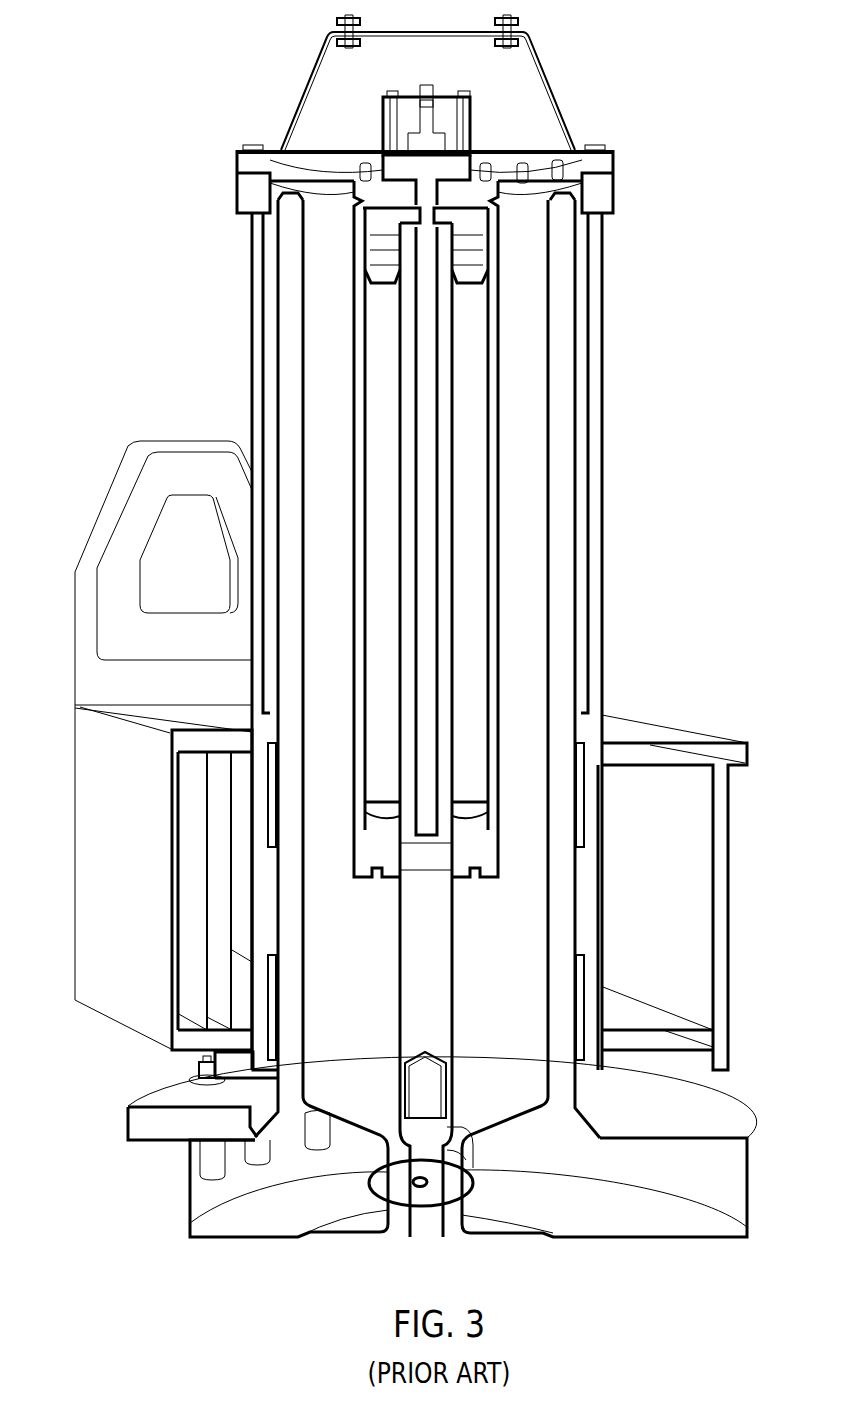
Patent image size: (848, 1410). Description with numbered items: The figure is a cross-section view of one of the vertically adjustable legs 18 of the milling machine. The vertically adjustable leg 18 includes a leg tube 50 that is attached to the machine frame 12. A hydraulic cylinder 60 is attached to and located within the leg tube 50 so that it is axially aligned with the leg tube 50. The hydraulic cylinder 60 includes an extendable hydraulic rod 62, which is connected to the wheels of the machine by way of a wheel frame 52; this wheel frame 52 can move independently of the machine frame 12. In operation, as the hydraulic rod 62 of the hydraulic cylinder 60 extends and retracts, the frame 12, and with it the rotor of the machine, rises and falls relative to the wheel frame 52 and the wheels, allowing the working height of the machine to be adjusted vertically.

The frame 12 is at (103, 953).
The vertically adjustable leg 18 is at (634, 125).
The leg tube 50 is at (580, 640).
The wheel frame 52 is at (170, 1095).
The hydraulic cylinder 60 is at (481, 848).
The hydraulic rod 62 is at (433, 1022).